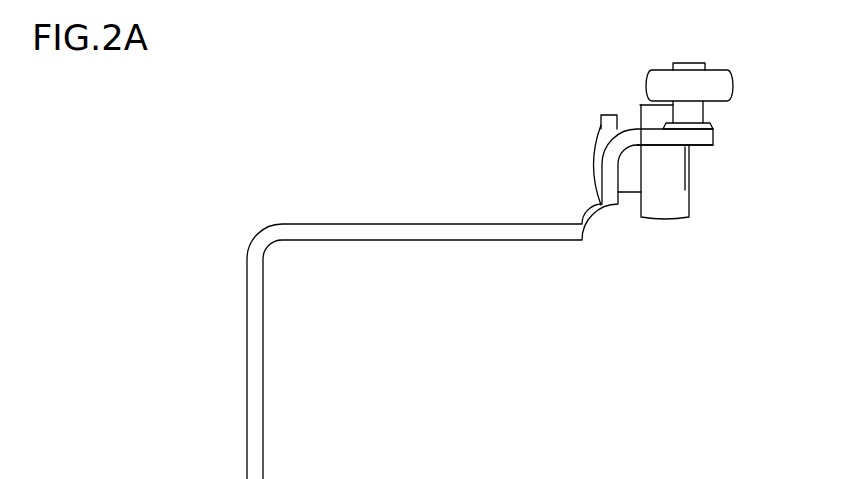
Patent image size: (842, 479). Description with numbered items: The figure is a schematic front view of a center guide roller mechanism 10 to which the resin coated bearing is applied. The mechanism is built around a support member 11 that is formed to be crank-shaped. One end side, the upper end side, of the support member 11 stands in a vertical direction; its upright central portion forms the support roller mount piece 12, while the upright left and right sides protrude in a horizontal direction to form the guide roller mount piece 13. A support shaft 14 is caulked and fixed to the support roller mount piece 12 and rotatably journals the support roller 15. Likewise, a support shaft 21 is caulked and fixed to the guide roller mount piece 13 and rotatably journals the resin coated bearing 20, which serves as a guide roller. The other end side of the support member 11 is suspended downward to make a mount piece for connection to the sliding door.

The center guide roller mechanism 10 is at (480, 299).
The support member 11 is at (412, 230).
The support roller mount piece 12 is at (610, 118).
The guide roller mount piece 13 is at (653, 147).
The support shaft 14 is at (630, 192).
The support roller 15 is at (670, 212).
The resin coated bearing 20 is at (708, 74).
The support shaft 21 is at (698, 113).